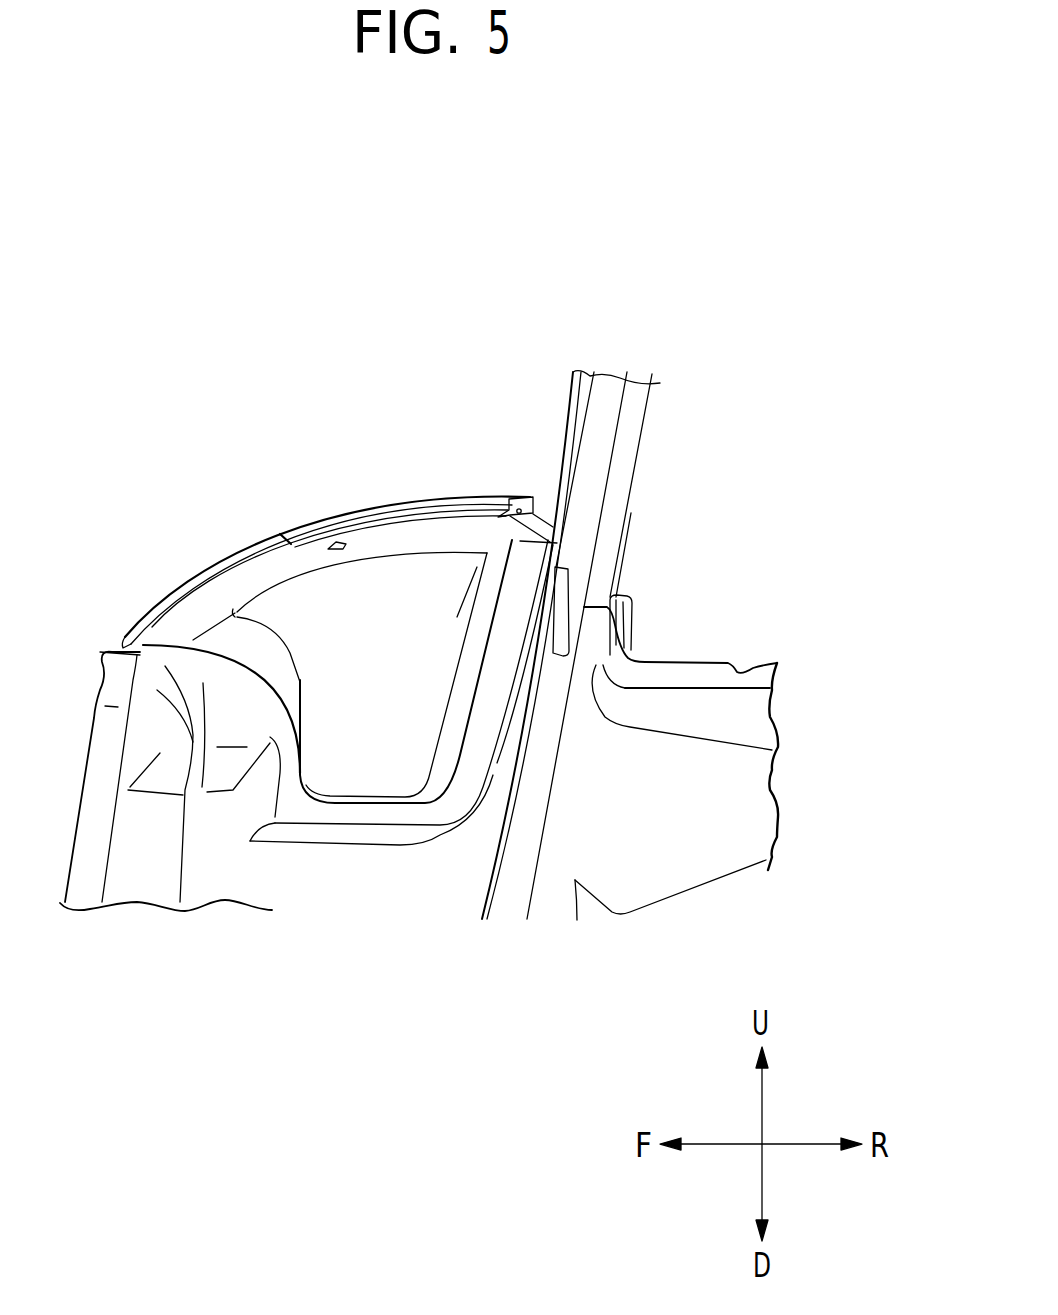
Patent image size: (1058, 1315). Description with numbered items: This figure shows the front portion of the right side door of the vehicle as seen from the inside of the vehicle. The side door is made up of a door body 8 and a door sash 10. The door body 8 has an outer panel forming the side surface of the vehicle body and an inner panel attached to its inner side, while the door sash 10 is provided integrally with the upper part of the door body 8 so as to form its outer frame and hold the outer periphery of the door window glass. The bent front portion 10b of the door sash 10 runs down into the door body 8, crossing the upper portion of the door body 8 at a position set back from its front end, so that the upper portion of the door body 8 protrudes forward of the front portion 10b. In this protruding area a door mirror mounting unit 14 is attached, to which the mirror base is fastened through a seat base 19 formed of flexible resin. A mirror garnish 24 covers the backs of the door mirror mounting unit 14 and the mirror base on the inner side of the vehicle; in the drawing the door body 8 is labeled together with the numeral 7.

The side sill 7 is at (262, 881).
The door body 8 is at (166, 952).
The door sash 10 is at (652, 645).
The front portion 10b is at (598, 462).
The door mirror mounting unit 14 is at (188, 660).
The seat base 19 is at (405, 500).
The mirror garnish 24 is at (310, 588).